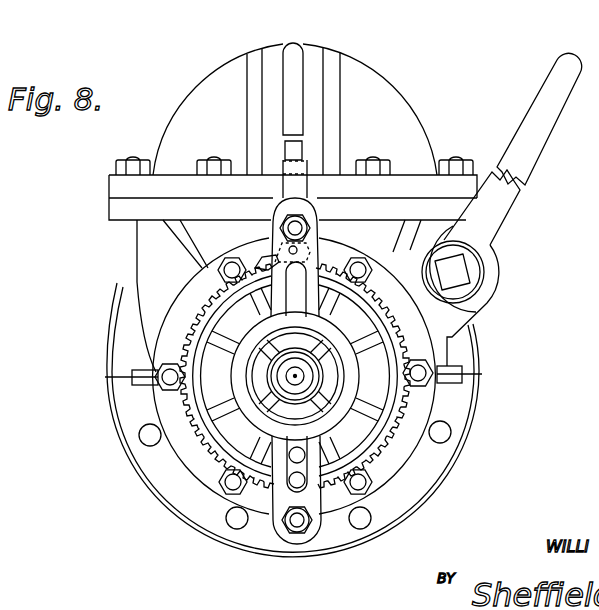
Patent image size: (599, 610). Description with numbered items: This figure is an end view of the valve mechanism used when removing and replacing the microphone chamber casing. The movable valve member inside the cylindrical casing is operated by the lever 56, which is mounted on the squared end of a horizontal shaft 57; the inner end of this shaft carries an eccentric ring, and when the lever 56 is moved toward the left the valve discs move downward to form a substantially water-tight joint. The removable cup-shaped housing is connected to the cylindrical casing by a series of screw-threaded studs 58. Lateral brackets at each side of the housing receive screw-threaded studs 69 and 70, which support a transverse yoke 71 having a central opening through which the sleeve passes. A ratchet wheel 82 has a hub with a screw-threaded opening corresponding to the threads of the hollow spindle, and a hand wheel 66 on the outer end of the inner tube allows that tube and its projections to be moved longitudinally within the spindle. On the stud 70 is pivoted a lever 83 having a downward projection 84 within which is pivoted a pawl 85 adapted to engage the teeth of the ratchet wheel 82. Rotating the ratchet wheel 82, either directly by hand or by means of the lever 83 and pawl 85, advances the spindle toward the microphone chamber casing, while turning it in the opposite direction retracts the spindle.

The lever 56 is at (545, 150).
The horizontal shaft 57 is at (466, 279).
The screw-threaded studs 58 is at (462, 385).
The hand wheel 66 is at (347, 404).
The screw-threaded stud 69 is at (312, 229).
The screw-threaded stud 70 is at (296, 528).
The transverse yoke 71 is at (322, 508).
The ratchet wheel 82 is at (210, 452).
The lever 83 is at (297, 46).
The downward projection 84 is at (263, 245).
The pawl 85 is at (206, 263).